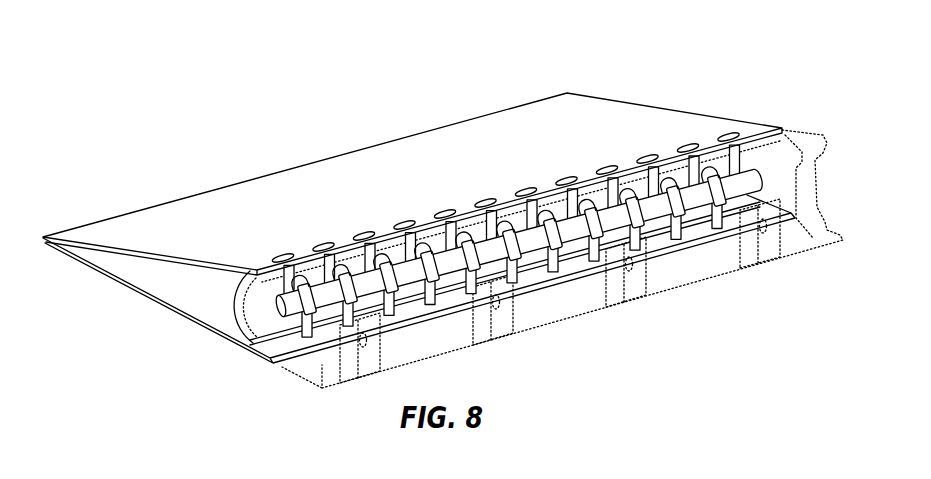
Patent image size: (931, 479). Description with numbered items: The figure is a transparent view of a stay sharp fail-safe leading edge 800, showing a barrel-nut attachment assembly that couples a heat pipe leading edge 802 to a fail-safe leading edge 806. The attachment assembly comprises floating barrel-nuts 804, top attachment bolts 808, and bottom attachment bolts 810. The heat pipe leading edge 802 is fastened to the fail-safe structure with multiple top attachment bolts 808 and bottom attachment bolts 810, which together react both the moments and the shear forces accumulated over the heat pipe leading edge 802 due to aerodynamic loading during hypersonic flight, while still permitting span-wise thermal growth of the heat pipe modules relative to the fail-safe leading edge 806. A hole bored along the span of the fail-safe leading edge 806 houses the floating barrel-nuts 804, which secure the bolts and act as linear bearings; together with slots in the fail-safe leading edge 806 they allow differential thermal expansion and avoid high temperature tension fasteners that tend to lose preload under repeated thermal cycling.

The stay sharp fail-safe leading edge 800 is at (287, 47).
The heat pipe leading edge 802 is at (390, 158).
The floating barrel-nuts 804 is at (274, 306).
The fail-safe leading edge 806 is at (715, 283).
The top attachment bolts 808 is at (277, 262).
The bottom attachment bolts 810 is at (312, 335).